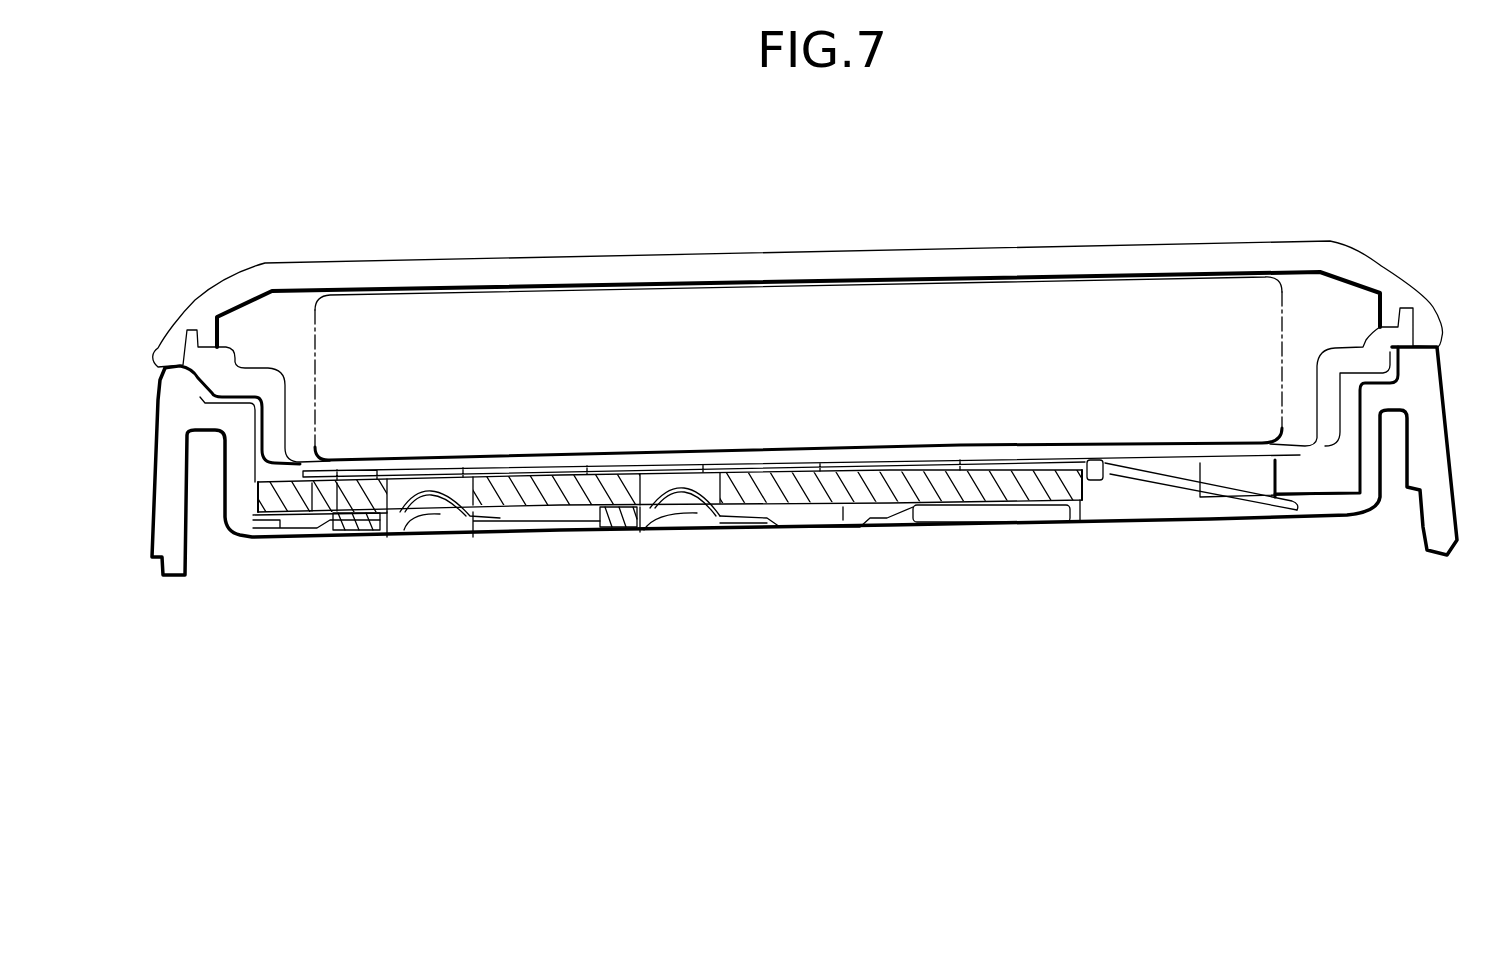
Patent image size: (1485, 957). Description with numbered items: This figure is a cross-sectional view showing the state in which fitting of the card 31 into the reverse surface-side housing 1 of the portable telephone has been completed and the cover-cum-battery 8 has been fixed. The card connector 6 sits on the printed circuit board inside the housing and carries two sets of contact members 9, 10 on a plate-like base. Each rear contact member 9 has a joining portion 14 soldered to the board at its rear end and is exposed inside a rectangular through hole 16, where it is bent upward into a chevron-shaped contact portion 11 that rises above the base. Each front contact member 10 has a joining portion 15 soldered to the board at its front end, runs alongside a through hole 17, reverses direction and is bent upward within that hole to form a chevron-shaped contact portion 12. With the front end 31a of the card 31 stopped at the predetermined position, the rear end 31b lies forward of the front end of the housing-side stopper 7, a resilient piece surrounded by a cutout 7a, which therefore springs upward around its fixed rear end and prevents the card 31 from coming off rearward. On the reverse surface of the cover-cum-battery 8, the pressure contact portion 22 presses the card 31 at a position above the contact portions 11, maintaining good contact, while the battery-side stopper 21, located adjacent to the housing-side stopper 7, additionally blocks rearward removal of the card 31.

The reverse surface-side housing 1 is at (1330, 507).
The card connector 6 is at (613, 518).
The housing-side stopper 7 is at (1125, 472).
The cutout 7a is at (1175, 508).
The cover-cum-battery 8 is at (862, 250).
The contact member 9 is at (813, 523).
The contact member 10 is at (573, 532).
The contact portion 11 is at (693, 517).
The contact portion 12 is at (441, 517).
The joining portion 14 is at (877, 528).
The joining portion 15 is at (304, 540).
The through hole 16 is at (750, 513).
The through hole 17 is at (503, 518).
The battery-side stopper 21 is at (1220, 493).
The pressure contact portion 22 is at (663, 470).
The card 31 is at (963, 490).
The front end 31a is at (246, 532).
The rear end 31b is at (1090, 487).